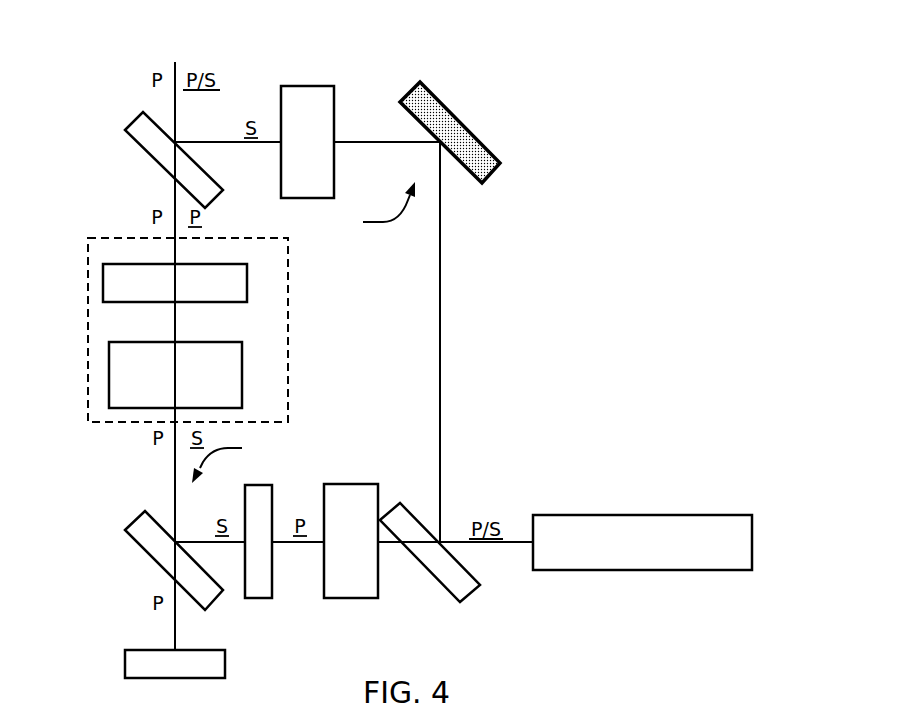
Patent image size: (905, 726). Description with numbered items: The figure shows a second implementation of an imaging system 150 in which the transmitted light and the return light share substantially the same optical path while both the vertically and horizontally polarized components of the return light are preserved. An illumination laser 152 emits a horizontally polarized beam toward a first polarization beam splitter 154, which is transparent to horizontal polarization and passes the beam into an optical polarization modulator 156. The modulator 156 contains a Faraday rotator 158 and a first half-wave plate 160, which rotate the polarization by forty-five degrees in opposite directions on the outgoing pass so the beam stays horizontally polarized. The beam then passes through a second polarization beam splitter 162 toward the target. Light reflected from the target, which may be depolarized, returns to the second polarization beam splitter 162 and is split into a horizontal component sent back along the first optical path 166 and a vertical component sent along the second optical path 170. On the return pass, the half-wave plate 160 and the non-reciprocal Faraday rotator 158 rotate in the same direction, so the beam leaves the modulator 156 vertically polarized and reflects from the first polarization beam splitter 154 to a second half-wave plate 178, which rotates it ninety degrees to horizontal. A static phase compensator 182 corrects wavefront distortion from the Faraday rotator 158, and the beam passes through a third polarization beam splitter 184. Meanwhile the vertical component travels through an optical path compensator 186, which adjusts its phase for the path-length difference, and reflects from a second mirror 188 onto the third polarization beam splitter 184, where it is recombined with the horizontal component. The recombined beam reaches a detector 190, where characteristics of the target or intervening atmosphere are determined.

The imaging system 150 is at (550, 44).
The illumination laser 152 is at (210, 650).
The first polarization beam splitter 154 is at (137, 520).
The optical polarization modulator 156 is at (290, 327).
The Faraday rotator 158 is at (202, 342).
The first half-wave plate 160 is at (202, 264).
The second polarization beam splitter 162 is at (215, 201).
The first optical path 166 is at (239, 460).
The second optical path 170 is at (368, 207).
The second half-wave plate 178 is at (258, 485).
The static phase compensator 182 is at (367, 484).
The third polarization beam splitter 184 is at (479, 586).
The optical path compensator 186 is at (287, 86).
The second mirror 188 is at (481, 143).
The detector 190 is at (560, 515).